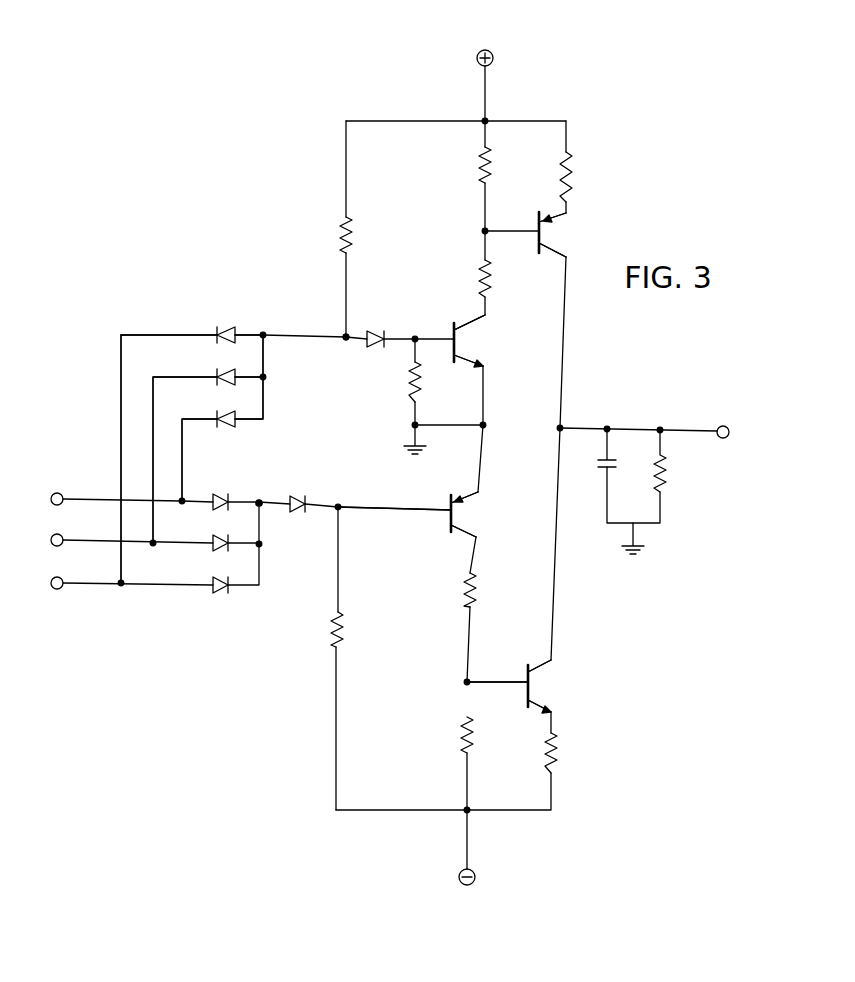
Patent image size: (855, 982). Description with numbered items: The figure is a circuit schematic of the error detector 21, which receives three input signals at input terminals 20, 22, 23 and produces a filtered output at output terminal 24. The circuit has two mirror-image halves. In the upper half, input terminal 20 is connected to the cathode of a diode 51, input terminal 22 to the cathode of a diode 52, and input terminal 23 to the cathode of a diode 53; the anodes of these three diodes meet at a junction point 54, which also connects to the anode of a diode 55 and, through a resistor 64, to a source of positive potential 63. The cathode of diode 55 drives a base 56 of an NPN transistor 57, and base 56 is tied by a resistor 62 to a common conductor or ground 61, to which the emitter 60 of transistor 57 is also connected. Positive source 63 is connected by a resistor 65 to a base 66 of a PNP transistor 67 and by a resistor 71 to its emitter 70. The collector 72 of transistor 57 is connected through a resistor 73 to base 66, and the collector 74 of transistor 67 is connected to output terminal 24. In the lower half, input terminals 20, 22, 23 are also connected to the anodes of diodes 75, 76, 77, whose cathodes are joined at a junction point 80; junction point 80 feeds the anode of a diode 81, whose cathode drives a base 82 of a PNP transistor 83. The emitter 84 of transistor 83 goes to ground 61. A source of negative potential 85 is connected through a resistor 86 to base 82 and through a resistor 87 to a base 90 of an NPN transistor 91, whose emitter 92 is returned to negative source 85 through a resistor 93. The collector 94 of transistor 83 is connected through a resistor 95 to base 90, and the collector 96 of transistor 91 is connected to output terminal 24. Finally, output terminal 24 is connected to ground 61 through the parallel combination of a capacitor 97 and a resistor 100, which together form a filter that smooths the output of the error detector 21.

The input terminal 20 is at (53, 493).
The error detector 21 is at (233, 289).
The input terminal 22 is at (53, 535).
The input terminal 23 is at (53, 578).
The output terminal 24 is at (727, 429).
The diode 51 is at (221, 413).
The diode 52 is at (222, 372).
The diode 53 is at (221, 330).
The junction point 54 is at (341, 339).
The diode 55 is at (383, 328).
The base 56 is at (451, 338).
The transistor 57 is at (462, 352).
The emitter 60 is at (478, 368).
The ground 61 is at (408, 446).
The resistor 62 is at (410, 382).
The source of positive potential 63 is at (493, 54).
The resistor 64 is at (351, 226).
The resistor 65 is at (480, 166).
The base 66 is at (533, 233).
The transistor 67 is at (548, 243).
The emitter 70 is at (553, 212).
The resistor 71 is at (571, 170).
The collector 72 is at (473, 318).
The resistor 73 is at (480, 278).
The collector 74 is at (556, 252).
The diode 75 is at (218, 497).
The diode 76 is at (218, 539).
The diode 77 is at (218, 581).
The junction point 80 is at (258, 501).
The diode 81 is at (299, 501).
The base 82 is at (446, 512).
The transistor 83 is at (461, 526).
The emitter 84 is at (470, 492).
The source of negative potential 85 is at (476, 877).
The resistor 86 is at (343, 638).
The resistor 87 is at (462, 735).
The base 90 is at (522, 680).
The transistor 91 is at (533, 691).
The emitter 92 is at (543, 707).
The resistor 93 is at (560, 750).
The collector 94 is at (465, 536).
The resistor 95 is at (466, 586).
The collector 96 is at (546, 662).
The capacitor 97 is at (600, 460).
The resistor 100 is at (668, 470).